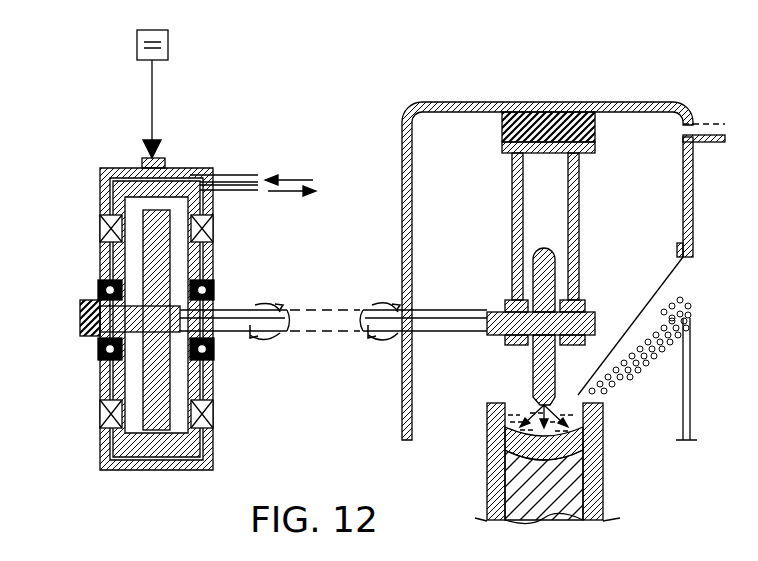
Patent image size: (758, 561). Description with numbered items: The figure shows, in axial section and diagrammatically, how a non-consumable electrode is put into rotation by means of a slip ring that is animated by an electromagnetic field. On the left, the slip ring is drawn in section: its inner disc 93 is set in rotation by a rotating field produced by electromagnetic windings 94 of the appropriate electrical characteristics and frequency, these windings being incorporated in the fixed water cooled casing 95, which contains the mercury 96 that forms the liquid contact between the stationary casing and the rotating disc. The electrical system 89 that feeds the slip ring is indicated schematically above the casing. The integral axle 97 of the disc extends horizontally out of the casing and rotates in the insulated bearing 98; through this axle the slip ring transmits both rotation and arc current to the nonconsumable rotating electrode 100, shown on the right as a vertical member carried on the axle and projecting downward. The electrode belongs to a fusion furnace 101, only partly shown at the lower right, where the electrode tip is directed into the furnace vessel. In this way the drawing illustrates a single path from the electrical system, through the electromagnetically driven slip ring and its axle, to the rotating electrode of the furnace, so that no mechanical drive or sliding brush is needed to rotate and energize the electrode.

The electrical system 89 is at (152, 110).
The fixed water cooled casing 95 is at (130, 168).
The electromagnetic windings 94 is at (100, 232).
The insulated bearing 98 is at (100, 283).
The inner disc 93 is at (150, 387).
The mercury 96 is at (130, 432).
The integral axle 97 is at (462, 318).
The nonconsumable rotating electrode 100 is at (544, 252).
The fusion furnace 101 is at (530, 410).